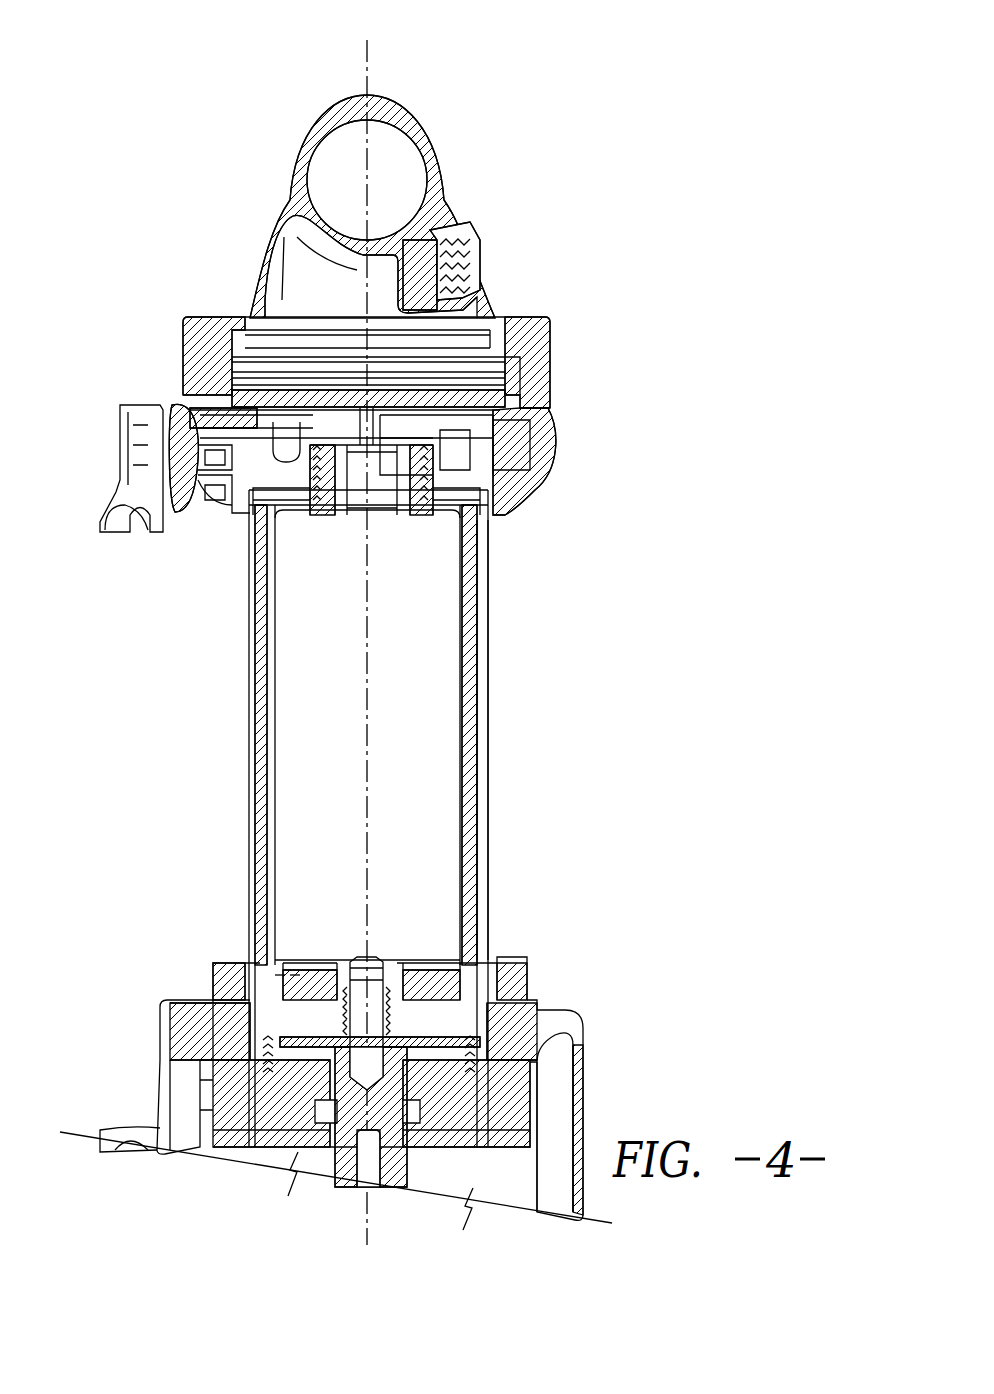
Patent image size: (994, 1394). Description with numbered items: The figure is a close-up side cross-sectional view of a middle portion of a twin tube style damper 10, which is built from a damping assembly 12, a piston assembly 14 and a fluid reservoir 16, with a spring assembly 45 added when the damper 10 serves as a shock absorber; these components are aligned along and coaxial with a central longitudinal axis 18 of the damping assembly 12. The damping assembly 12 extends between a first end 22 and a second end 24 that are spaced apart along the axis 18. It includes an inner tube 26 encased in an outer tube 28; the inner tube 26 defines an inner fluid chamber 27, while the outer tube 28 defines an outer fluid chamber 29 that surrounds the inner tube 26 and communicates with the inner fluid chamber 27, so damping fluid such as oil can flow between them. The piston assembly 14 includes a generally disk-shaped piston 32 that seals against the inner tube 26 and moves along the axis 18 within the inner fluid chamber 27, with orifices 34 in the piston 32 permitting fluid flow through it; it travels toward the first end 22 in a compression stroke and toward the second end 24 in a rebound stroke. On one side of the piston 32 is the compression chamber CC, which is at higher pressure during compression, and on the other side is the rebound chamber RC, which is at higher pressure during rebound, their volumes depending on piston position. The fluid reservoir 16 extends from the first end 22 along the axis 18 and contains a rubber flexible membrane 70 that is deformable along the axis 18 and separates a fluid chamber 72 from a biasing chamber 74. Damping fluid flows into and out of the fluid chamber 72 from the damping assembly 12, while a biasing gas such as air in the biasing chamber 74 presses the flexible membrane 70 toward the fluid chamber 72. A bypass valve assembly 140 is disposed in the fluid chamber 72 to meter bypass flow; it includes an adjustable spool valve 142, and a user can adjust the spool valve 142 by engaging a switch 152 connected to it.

The twin tube style damper 10 is at (628, 216).
The damping assembly 12 is at (408, 818).
The piston assembly 14 is at (395, 944).
The fluid reservoir 16 is at (508, 300).
The central longitudinal axis 18 is at (362, 85).
The first end 22 is at (343, 428).
The second end 24 is at (260, 1130).
The inner tube 26 is at (480, 862).
The inner fluid chamber 27 is at (428, 810).
The outer tube 28 is at (473, 697).
The outer fluid chamber 29 is at (473, 773).
The piston 32 is at (308, 973).
The orifices 34 is at (333, 983).
The spring assembly 45 is at (602, 1098).
The flexible membrane 70 is at (462, 400).
The fluid chamber 72 is at (525, 413).
The biasing chamber 74 is at (328, 306).
The bypass valve assembly 140 is at (167, 397).
The spool valve 142 is at (225, 488).
The switch 152 is at (122, 442).
The compression chamber CC is at (343, 688).
The rebound chamber RC is at (217, 990).